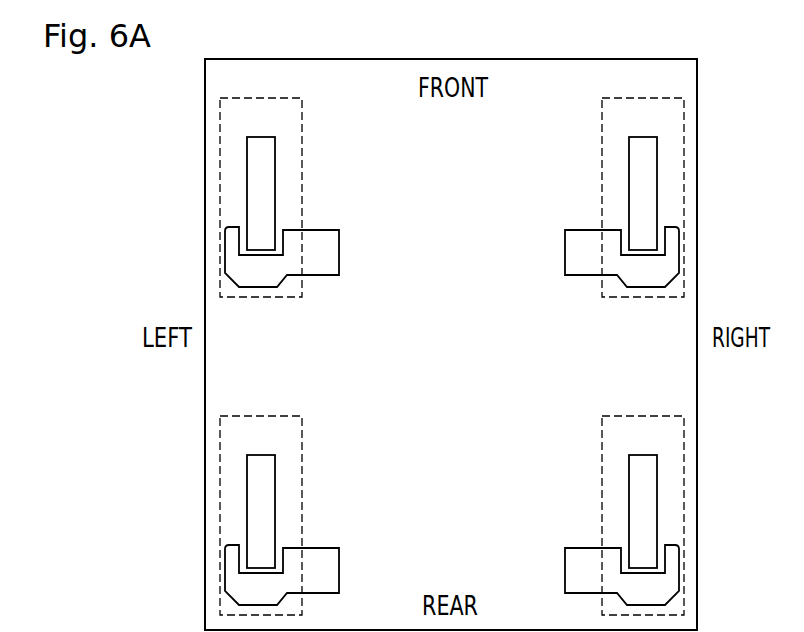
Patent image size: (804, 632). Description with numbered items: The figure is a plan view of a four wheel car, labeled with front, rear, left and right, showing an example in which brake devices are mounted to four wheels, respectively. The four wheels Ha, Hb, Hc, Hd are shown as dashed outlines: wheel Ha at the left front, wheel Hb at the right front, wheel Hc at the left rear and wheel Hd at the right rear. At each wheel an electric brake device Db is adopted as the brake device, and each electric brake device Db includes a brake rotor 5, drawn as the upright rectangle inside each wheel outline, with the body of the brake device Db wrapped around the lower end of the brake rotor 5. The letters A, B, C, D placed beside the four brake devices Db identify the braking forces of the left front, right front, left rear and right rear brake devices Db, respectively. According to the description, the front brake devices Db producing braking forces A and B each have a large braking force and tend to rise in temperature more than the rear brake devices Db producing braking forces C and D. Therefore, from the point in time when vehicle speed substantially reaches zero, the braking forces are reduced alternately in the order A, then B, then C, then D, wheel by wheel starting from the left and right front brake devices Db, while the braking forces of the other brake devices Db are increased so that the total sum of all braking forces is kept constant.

The brake rotor 5 is at (255, 170).
The electric brake device Db is at (227, 222).
The wheel Ha is at (227, 109).
The wheel Hb is at (677, 109).
The wheel Hc is at (227, 428).
The wheel Hd is at (673, 428).
The braking force A is at (320, 207).
The braking force B is at (583, 207).
The braking force C is at (317, 525).
The braking force D is at (581, 524).